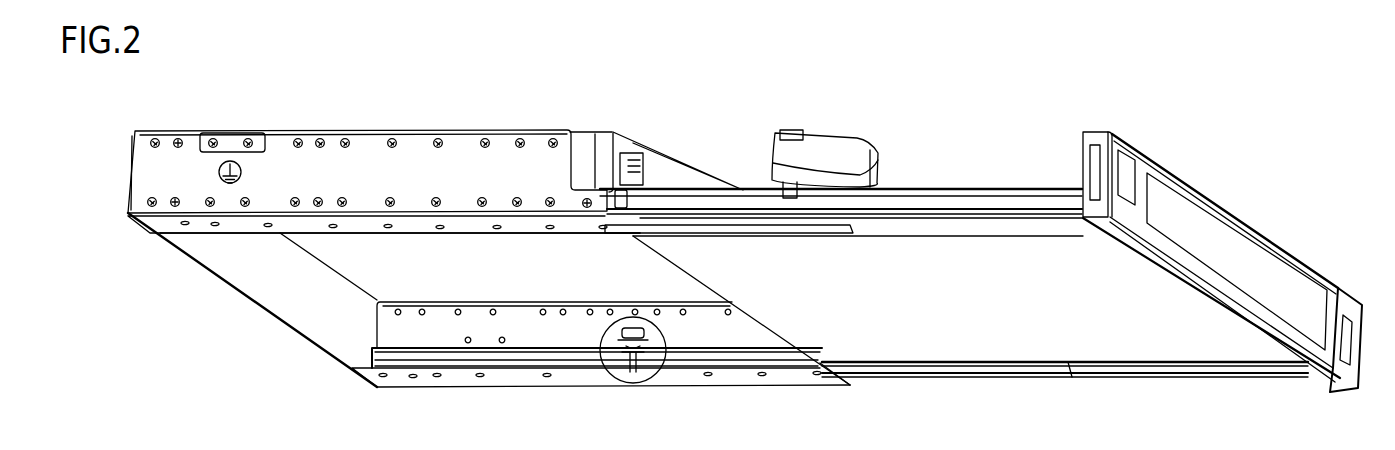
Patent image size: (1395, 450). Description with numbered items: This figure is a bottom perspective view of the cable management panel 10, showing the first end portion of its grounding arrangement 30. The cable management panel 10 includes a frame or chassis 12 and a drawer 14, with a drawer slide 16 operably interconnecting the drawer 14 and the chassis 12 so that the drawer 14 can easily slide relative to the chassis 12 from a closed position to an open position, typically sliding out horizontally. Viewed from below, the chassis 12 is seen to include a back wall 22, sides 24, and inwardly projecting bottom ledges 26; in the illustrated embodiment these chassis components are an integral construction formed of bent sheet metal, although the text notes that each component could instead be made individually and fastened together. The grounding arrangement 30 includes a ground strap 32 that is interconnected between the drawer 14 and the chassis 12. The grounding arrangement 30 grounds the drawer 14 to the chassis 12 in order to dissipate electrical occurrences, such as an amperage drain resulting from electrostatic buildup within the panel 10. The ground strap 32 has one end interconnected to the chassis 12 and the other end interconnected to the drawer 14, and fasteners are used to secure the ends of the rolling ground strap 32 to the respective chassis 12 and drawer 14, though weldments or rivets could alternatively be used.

The cable management panel 10 is at (683, 110).
The chassis 12 is at (212, 300).
The drawer 14 is at (1237, 146).
The drawer slide 16 is at (822, 228).
The back wall 22 is at (293, 292).
The sides 24 is at (367, 160).
The bottom ledges 26 is at (510, 225).
The grounding arrangement 30 is at (620, 362).
The ground strap 32 is at (733, 328).